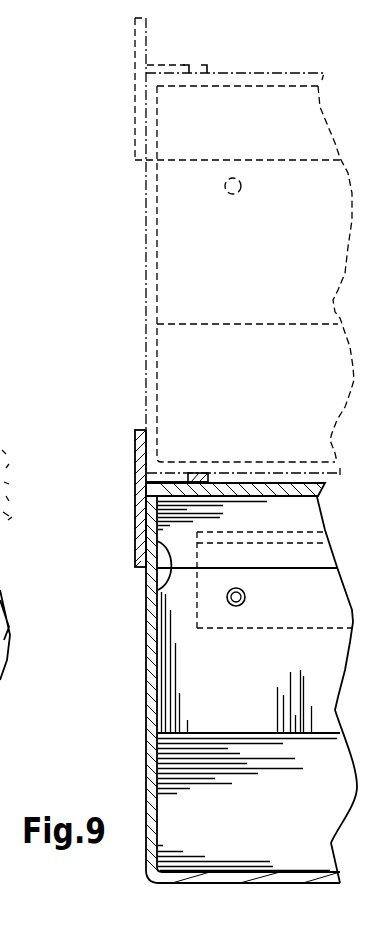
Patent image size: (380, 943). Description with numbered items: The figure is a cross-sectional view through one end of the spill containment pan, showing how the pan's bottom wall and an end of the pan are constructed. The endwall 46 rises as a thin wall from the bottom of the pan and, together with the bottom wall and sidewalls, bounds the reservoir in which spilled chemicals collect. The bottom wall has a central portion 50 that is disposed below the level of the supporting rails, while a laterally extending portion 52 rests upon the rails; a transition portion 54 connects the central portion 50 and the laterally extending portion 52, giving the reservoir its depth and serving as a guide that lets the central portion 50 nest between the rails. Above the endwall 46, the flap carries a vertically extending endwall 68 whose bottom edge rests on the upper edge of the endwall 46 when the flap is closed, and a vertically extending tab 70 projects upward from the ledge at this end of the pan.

The tab 70 is at (135, 460).
The endwall of flap 68 is at (158, 589).
The endwall 46 is at (150, 643).
The laterally extending portion 52 is at (212, 733).
The transition portion 54 is at (272, 828).
The central portion 50 is at (209, 877).